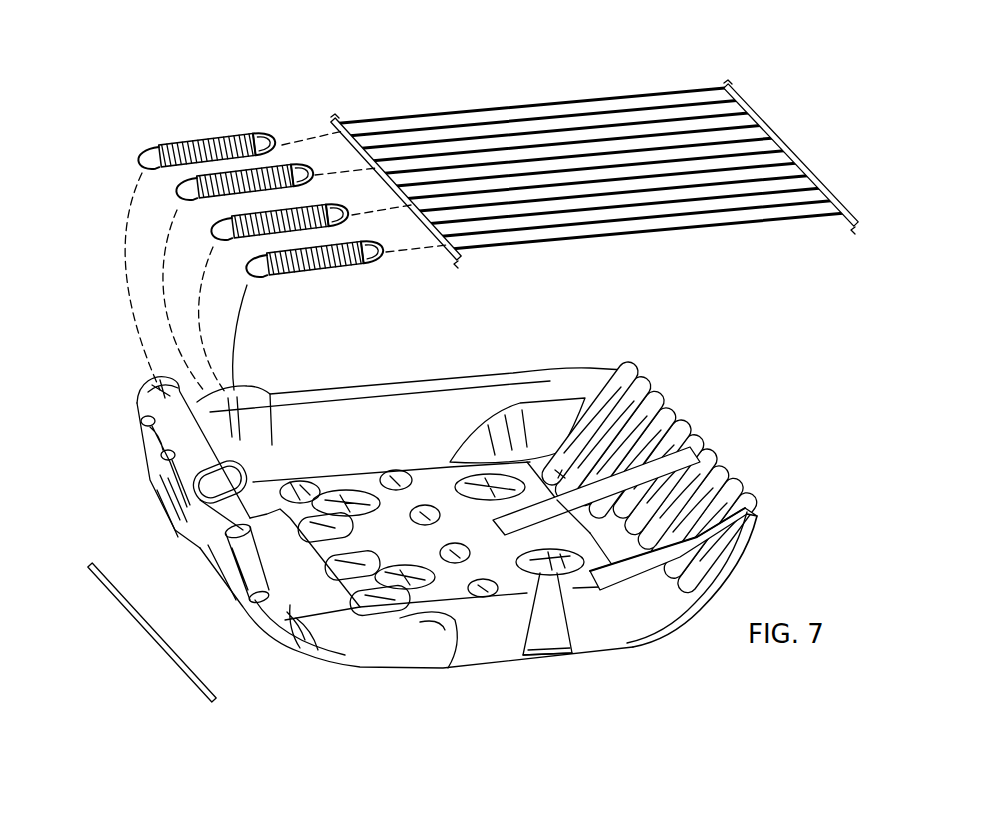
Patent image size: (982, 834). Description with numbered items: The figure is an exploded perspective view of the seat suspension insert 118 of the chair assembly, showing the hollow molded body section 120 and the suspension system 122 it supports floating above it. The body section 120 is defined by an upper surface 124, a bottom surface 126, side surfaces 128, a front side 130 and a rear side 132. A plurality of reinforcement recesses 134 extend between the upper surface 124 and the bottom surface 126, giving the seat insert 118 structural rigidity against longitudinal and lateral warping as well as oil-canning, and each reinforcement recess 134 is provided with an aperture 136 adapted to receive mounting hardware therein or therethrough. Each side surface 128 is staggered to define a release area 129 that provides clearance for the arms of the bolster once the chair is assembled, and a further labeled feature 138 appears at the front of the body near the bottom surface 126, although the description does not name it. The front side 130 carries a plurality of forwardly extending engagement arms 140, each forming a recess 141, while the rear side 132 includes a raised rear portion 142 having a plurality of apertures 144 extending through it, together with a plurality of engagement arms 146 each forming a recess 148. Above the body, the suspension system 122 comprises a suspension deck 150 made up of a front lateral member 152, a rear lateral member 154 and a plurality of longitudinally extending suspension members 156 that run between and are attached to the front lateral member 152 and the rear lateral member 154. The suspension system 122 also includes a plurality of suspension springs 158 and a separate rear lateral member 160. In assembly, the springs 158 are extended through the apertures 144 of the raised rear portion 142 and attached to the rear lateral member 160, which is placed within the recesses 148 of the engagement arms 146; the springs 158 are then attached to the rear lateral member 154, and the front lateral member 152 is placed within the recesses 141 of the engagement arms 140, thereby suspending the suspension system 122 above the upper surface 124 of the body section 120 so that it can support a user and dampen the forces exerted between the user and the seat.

The seat suspension insert 118 is at (606, 153).
The hollow molded body section 120 is at (450, 552).
The suspension system 122 is at (606, 155).
The upper surface 124 is at (423, 482).
The bottom surface 126 is at (503, 662).
The side surfaces 128 is at (647, 630).
The release area 129 is at (478, 705).
The front side 130 is at (757, 522).
The rear side 132 is at (283, 608).
The reinforcement recesses 134 is at (357, 497).
The aperture 136 is at (550, 568).
The lug 138 is at (453, 668).
The engagement arms 140 is at (628, 477).
The recess 141 is at (710, 468).
The raised rear portion 142 is at (152, 382).
The apertures 144 is at (297, 486).
The engagement arms 146 is at (242, 565).
The recess 148 is at (155, 467).
The suspension deck 150 is at (803, 142).
The front lateral member 152 is at (817, 178).
The rear lateral member 154 is at (352, 134).
The suspension members 156 is at (752, 226).
The suspension springs 158 is at (218, 178).
The rear lateral member 160 is at (206, 700).